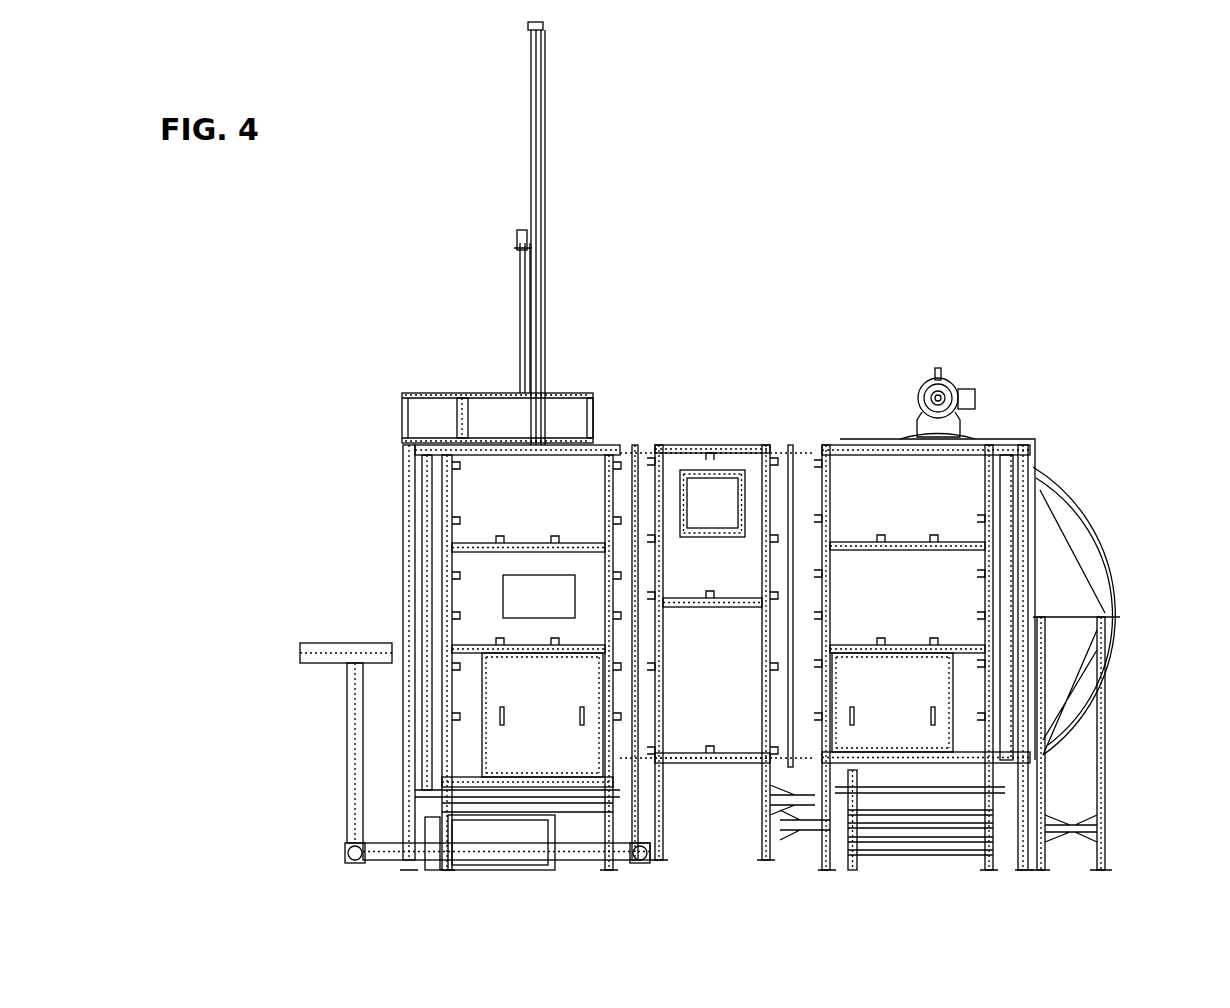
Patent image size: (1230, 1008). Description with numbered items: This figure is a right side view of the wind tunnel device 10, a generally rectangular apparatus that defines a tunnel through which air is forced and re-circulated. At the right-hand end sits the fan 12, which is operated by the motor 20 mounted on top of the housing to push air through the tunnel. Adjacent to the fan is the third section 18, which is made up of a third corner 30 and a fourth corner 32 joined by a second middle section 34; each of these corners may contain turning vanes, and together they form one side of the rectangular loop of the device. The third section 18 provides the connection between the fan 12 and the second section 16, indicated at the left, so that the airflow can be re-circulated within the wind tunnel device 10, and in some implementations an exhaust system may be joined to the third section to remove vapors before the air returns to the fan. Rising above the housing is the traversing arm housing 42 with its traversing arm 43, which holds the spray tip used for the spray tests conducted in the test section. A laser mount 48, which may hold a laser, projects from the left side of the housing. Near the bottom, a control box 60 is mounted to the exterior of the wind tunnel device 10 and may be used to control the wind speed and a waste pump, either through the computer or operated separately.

The wind tunnel device 10 is at (851, 197).
The fan 12 is at (1128, 515).
The second section 16 is at (300, 597).
The third section 18 is at (672, 385).
The motor 20 is at (942, 385).
The third corner 30 is at (468, 482).
The fourth corner 32 is at (960, 480).
The second middle section 34 is at (678, 470).
The traversing arm housing 42 is at (545, 150).
The traversing arm 43 is at (520, 290).
The laser mount 48 is at (315, 665).
The control box 60 is at (537, 600).